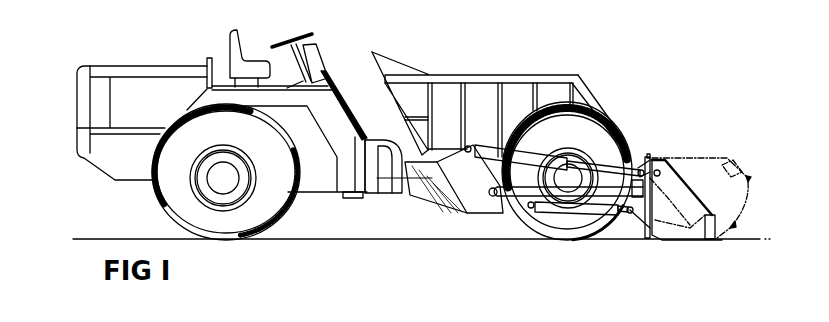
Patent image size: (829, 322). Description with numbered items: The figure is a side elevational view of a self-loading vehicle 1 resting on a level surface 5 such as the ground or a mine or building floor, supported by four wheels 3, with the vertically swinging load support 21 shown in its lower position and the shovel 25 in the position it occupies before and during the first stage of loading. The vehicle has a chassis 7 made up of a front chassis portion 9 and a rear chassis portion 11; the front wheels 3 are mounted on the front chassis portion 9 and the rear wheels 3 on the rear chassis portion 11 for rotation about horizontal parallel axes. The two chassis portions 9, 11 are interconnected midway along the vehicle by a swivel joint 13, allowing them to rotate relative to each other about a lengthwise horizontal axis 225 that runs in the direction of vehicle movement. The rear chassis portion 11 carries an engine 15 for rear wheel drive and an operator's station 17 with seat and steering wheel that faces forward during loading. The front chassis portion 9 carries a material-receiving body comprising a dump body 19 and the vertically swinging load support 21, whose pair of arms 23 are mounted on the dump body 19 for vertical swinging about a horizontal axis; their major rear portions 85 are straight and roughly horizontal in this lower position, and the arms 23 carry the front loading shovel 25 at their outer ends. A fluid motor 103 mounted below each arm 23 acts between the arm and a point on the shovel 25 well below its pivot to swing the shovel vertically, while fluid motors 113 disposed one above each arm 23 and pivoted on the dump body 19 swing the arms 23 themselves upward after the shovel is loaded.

The self-loading vehicle 1 is at (633, 99).
The wheels 3 is at (178, 201).
The level surface 5 is at (305, 238).
The chassis 7 is at (360, 195).
The front chassis portion 9 is at (450, 201).
The rear chassis portion 11 is at (334, 108).
The swivel joint 13 is at (403, 195).
The engine 15 is at (104, 160).
The operator's station 17 is at (236, 52).
The dump body 19 is at (475, 96).
The vertically swinging load support 21 is at (520, 192).
The arms 23 is at (607, 190).
The shovel 25 is at (698, 228).
The major rear portions 85 is at (574, 200).
The fluid motor 103 is at (592, 238).
The fluid motors 113 is at (528, 158).
The axis 225 is at (392, 150).